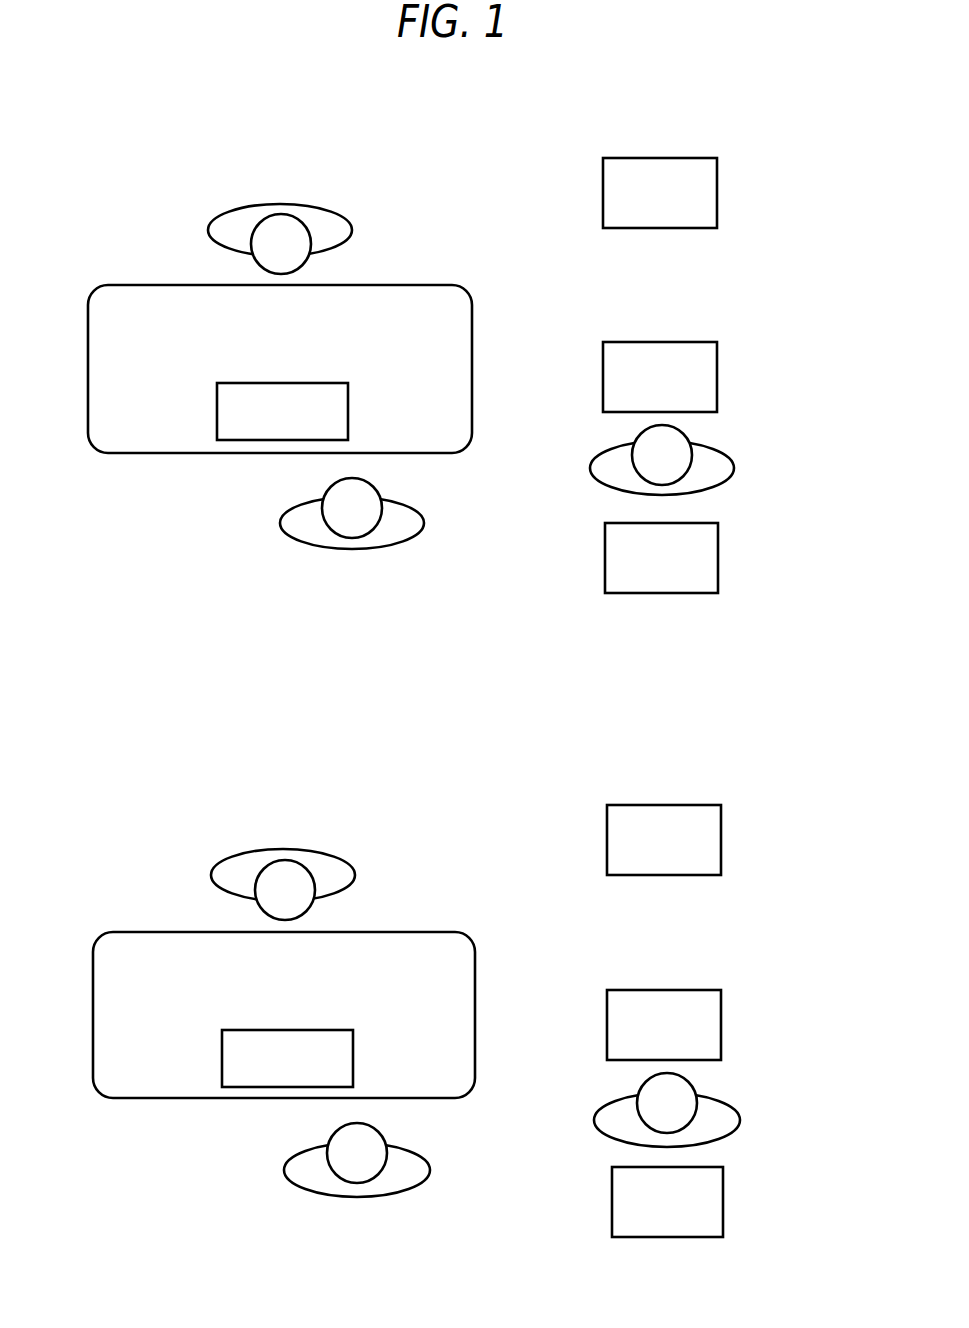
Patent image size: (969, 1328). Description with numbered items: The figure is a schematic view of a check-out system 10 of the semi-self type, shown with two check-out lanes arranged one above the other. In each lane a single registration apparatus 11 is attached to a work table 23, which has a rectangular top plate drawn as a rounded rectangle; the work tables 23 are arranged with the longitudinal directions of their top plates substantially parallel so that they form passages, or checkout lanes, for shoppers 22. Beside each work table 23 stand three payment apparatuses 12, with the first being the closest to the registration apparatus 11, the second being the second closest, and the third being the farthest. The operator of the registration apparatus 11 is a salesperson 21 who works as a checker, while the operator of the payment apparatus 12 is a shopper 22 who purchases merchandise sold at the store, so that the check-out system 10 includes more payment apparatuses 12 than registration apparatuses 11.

The check-out system 10 is at (97, 143).
The registration apparatus 11 is at (340, 383).
The payment apparatus 12 is at (717, 192).
The salesperson 21 is at (322, 209).
The shopper 22 is at (397, 549).
The work table 23 is at (445, 285).